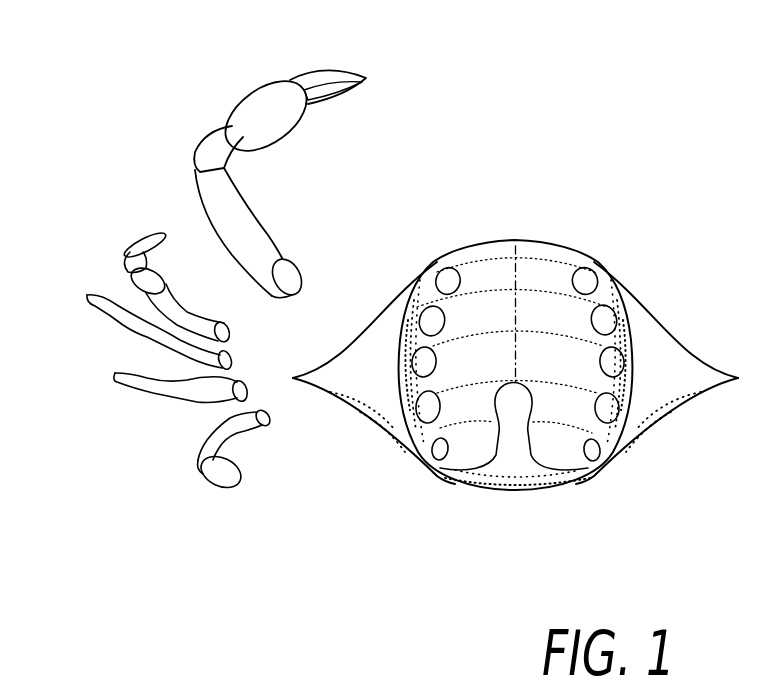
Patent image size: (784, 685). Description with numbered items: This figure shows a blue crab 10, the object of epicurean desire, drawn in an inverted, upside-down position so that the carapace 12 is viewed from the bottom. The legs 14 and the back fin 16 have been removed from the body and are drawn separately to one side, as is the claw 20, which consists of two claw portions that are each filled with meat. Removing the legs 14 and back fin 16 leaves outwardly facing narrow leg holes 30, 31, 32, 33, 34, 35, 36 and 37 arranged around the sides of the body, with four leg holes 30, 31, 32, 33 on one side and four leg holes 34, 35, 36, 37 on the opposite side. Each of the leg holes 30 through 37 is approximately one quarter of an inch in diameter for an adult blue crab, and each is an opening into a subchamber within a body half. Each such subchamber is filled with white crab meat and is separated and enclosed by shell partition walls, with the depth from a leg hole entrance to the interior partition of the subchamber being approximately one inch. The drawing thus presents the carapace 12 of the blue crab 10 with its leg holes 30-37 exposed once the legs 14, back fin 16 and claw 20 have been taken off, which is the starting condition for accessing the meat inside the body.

The blue crab 10 is at (598, 214).
The carapace 12 is at (693, 358).
The legs 14 is at (140, 230).
The back fin 16 is at (256, 428).
The claw 20 is at (270, 80).
The leg hole 30 is at (437, 461).
The leg hole 31 is at (420, 414).
The leg hole 32 is at (417, 361).
The leg hole 33 is at (421, 313).
The leg hole 34 is at (610, 308).
The leg hole 35 is at (621, 355).
The leg hole 36 is at (618, 406).
The leg hole 37 is at (603, 463).